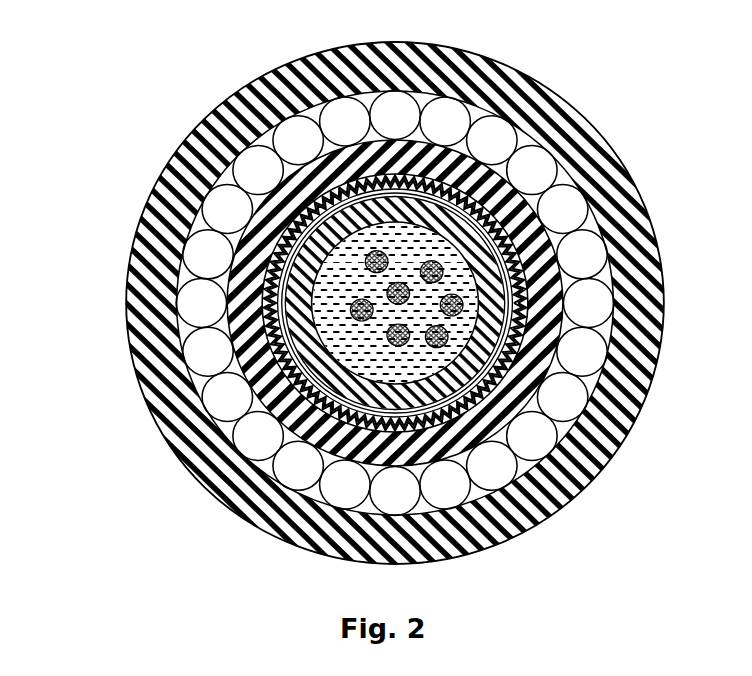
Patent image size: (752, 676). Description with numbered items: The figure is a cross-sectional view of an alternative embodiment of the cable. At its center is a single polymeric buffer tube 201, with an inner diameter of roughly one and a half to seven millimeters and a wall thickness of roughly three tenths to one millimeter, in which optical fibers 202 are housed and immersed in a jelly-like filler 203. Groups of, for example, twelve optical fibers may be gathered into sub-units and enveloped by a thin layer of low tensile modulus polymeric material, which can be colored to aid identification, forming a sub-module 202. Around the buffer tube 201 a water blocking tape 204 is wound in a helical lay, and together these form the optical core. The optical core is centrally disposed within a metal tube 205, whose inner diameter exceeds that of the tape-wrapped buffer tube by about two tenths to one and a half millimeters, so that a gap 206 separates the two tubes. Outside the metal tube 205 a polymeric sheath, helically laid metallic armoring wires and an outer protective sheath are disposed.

The polymeric buffer tube 201 is at (292, 312).
The optical fibers 202 is at (395, 360).
The jelly-like filler 203 is at (393, 340).
The water blocking tape 204 is at (255, 204).
The metal tube 205 is at (365, 224).
The gap 206 is at (317, 160).